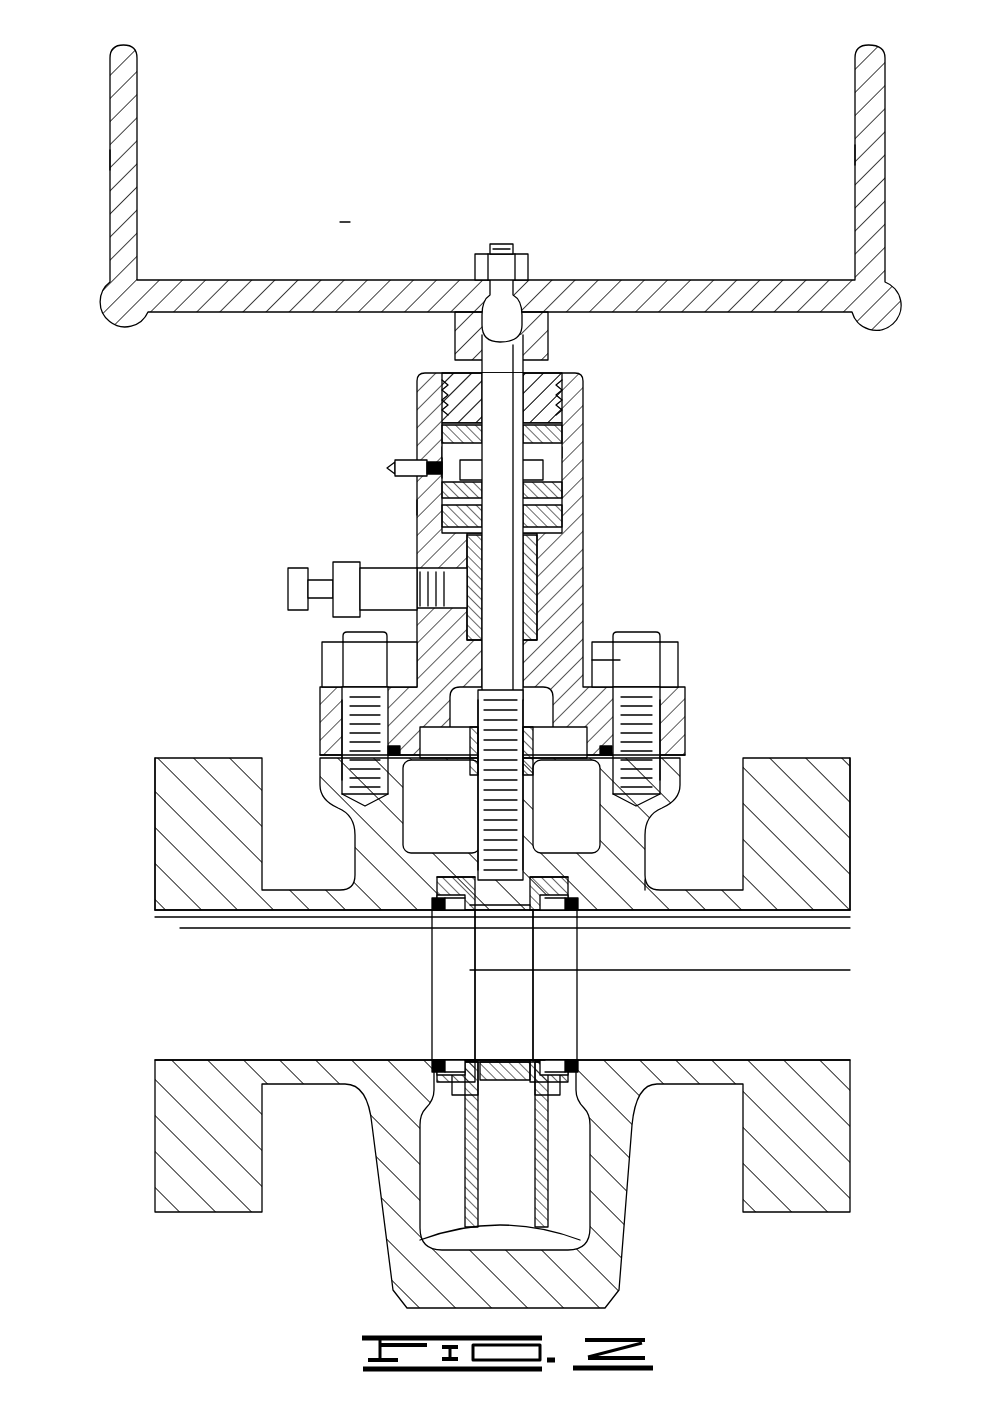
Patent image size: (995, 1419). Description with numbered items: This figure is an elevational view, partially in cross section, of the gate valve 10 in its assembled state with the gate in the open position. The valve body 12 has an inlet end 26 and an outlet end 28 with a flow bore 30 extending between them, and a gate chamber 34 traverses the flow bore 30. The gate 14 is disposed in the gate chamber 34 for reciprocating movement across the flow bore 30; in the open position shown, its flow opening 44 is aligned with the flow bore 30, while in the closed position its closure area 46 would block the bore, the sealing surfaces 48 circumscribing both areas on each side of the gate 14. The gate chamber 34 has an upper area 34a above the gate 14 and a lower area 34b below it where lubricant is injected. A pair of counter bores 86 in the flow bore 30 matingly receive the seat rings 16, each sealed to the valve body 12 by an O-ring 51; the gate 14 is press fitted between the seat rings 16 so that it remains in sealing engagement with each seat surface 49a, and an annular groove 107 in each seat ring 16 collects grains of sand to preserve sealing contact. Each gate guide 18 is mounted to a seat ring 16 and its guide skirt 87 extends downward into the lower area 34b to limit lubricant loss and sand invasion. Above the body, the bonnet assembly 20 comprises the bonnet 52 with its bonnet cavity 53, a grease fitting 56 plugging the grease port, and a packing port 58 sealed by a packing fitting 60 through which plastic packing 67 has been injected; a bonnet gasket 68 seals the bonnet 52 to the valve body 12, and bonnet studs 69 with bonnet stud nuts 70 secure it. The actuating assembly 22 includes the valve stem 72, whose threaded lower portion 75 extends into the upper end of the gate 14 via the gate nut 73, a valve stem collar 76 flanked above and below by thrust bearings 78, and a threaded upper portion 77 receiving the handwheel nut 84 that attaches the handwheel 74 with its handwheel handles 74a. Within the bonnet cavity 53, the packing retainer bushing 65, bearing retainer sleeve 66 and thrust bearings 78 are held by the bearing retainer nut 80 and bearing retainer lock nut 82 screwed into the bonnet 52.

The gate valve 10 is at (345, 222).
The valve body 12 is at (790, 755).
The gate 14 is at (478, 815).
The seat ring 16 is at (470, 915).
The gate guide 18 is at (450, 877).
The bonnet assembly 20 is at (415, 507).
The actuating assembly 22 is at (570, 470).
The inlet end 26 is at (156, 828).
The outlet end 28 is at (851, 830).
The flow bore 30 is at (185, 978).
The gate chamber 34 is at (600, 830).
The upper area 34a is at (501, 806).
The lower area 34b is at (505, 1156).
The flow opening 44 is at (504, 985).
The closure area 46 is at (475, 838).
The sealing surfaces 48 is at (480, 765).
The seat surface 49a is at (520, 905).
The O-ring 51 is at (448, 906).
The bonnet 52 is at (585, 385).
The bonnet cavity 53 is at (645, 660).
The grease fitting 56 is at (393, 462).
The packing port 58 is at (420, 505).
The packing fitting 60 is at (300, 588).
The packing retainer bushing 65 is at (572, 515).
The bearing retainer sleeve 66 is at (563, 452).
The plastic packing 67 is at (475, 600).
The bonnet gasket 68 is at (388, 751).
The bonnet stud 69 is at (347, 717).
The bonnet stud nut 70 is at (332, 668).
The valve stem 72 is at (555, 610).
The gate nut 73 is at (400, 750).
The handwheel 74 is at (679, 278).
The handwheel handle 74a is at (112, 150).
The threaded lower portion 75 is at (503, 695).
The valve stem collar 76 is at (565, 418).
The threaded upper portion 77 is at (505, 246).
The thrust bearing 78 is at (445, 430).
The bearing retainer nut 80 is at (440, 392).
The bearing retainer lock nut 82 is at (455, 352).
The handwheel nut 84 is at (478, 257).
The counter bore 86 is at (440, 908).
The guide skirt 87 is at (462, 1222).
The annular groove 107 is at (478, 1060).